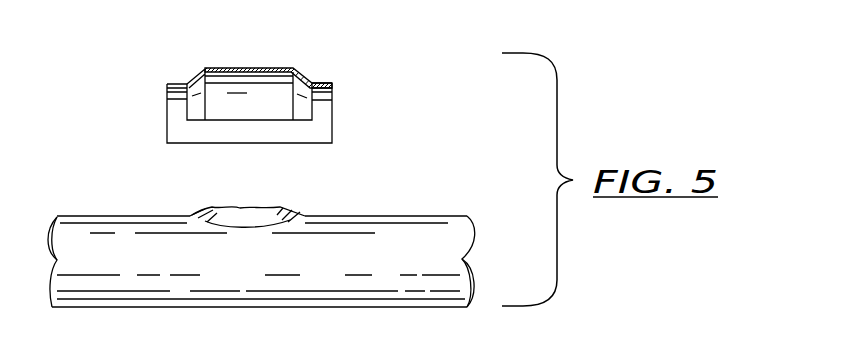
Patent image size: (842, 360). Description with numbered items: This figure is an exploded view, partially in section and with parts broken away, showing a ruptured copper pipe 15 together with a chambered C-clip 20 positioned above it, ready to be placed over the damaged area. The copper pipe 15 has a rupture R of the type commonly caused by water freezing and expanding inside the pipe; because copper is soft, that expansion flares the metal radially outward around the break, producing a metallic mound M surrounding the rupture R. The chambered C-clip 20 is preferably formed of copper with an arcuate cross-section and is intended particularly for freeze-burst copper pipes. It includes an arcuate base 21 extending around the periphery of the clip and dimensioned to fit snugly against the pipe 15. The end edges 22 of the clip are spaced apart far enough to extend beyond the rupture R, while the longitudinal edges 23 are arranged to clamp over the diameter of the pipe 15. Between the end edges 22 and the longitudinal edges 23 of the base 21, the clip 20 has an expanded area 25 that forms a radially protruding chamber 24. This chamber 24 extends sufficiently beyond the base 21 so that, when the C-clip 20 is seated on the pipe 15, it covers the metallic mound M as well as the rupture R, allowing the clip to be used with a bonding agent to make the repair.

The copper pipe 15 is at (396, 226).
The chambered C-clip 20 is at (345, 51).
The arcuate base 21 is at (333, 83).
The end edges 22 is at (167, 92).
The longitudinal edges 23 is at (188, 144).
The radially protruding chamber 24 is at (222, 90).
The expanded area 25 is at (278, 69).
The rupture R is at (230, 212).
The metallic mound M is at (290, 210).